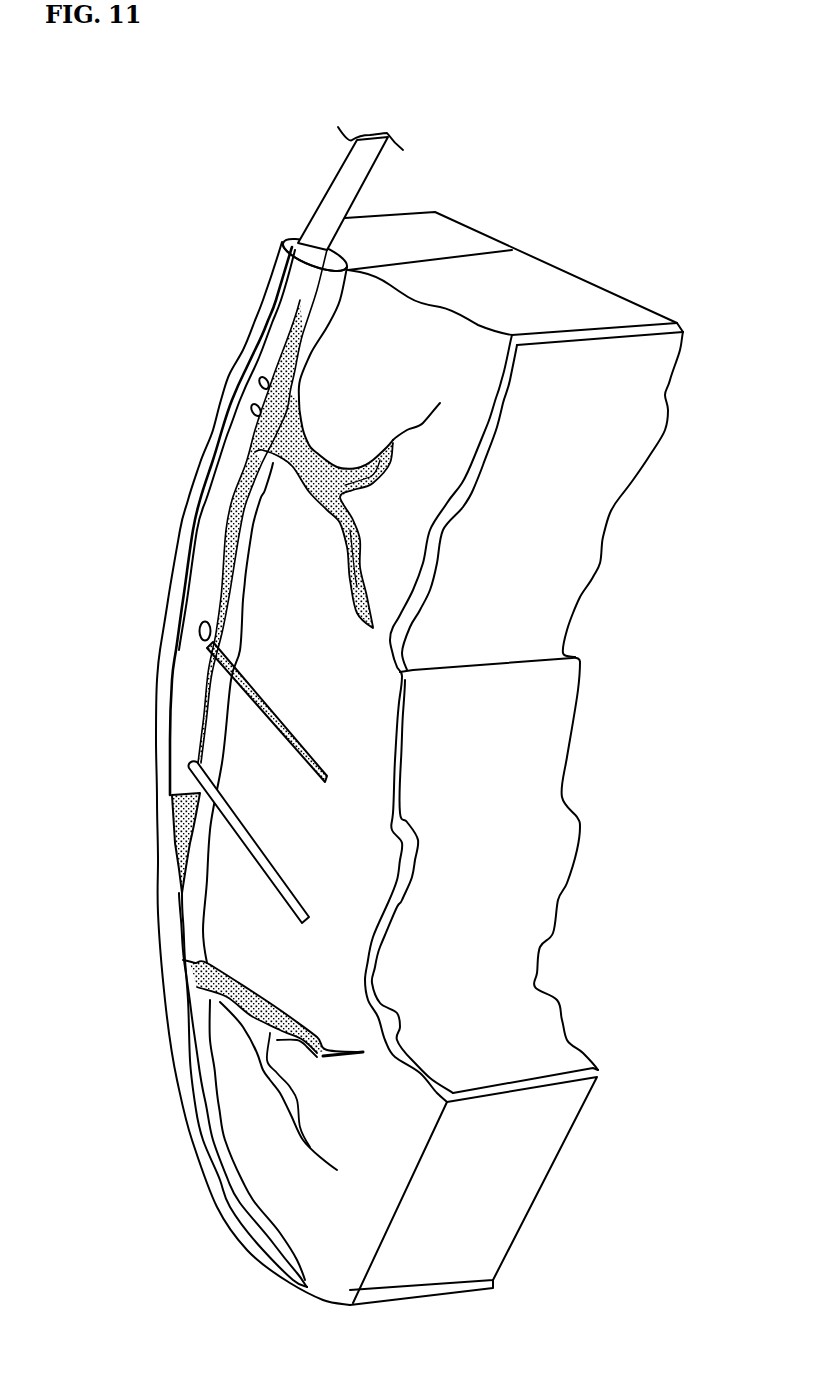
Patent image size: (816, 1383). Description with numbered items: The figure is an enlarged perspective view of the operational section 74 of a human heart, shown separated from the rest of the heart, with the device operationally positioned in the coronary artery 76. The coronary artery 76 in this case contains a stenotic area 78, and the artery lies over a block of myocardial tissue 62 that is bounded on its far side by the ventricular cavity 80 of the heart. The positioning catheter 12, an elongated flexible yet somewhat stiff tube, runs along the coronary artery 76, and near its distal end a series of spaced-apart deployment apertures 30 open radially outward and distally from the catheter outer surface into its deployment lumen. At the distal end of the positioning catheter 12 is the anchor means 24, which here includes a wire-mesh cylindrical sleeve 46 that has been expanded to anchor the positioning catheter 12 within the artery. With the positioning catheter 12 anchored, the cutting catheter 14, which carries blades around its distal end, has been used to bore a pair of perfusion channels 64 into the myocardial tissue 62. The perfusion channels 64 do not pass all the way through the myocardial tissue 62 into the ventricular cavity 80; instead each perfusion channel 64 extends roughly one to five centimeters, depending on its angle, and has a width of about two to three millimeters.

The positioning catheter 12 is at (223, 473).
The cutting catheter 14 is at (320, 883).
The anchor means 24 is at (168, 805).
The deployment aperture 30 is at (200, 630).
The cylindrical sleeve 46 is at (172, 813).
The myocardial tissue 62 is at (355, 815).
The perfusion channel 64 is at (280, 723).
The operational section 74 is at (192, 419).
The coronary artery 76 is at (270, 313).
The stenotic area 78 is at (187, 913).
The ventricular cavity 80 is at (490, 897).